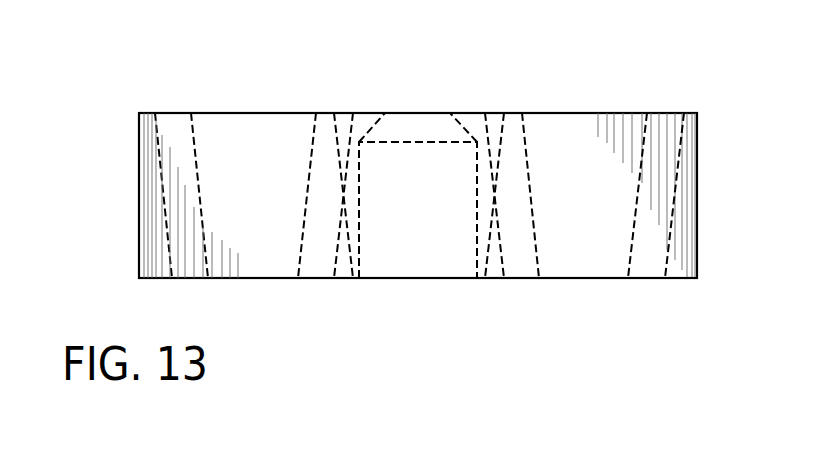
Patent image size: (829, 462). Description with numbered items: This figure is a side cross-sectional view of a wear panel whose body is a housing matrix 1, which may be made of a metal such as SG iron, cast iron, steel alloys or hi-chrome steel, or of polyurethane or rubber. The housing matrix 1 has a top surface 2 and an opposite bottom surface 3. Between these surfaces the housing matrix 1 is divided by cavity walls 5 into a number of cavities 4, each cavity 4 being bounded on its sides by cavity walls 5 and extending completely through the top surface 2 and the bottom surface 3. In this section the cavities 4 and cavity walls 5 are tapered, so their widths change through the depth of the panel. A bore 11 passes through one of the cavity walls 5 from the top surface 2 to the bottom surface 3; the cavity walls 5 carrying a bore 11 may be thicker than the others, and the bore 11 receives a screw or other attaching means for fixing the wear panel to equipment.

The housing matrix 1 is at (188, 72).
The top surface 2 is at (577, 113).
The bottom surface 3 is at (572, 278).
The cavity 4 is at (238, 145).
The cavity wall 5 is at (183, 161).
The bore 11 is at (392, 167).